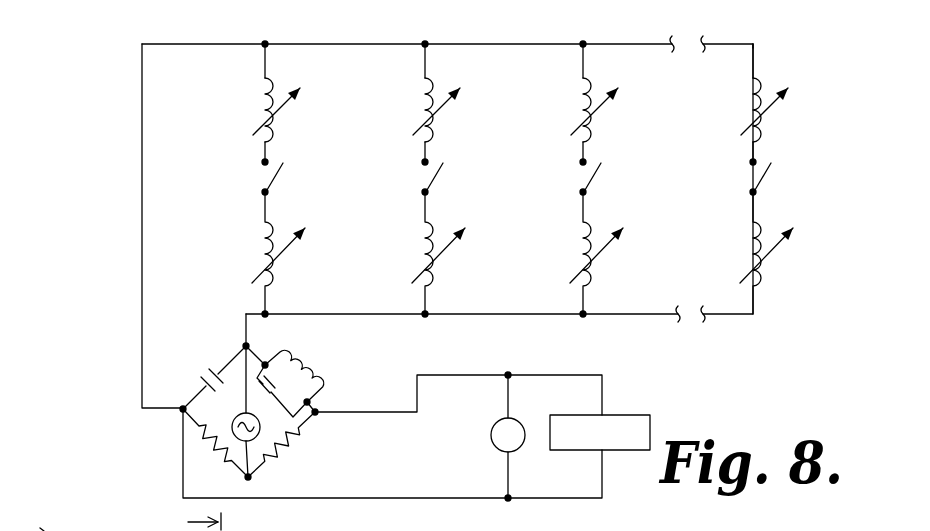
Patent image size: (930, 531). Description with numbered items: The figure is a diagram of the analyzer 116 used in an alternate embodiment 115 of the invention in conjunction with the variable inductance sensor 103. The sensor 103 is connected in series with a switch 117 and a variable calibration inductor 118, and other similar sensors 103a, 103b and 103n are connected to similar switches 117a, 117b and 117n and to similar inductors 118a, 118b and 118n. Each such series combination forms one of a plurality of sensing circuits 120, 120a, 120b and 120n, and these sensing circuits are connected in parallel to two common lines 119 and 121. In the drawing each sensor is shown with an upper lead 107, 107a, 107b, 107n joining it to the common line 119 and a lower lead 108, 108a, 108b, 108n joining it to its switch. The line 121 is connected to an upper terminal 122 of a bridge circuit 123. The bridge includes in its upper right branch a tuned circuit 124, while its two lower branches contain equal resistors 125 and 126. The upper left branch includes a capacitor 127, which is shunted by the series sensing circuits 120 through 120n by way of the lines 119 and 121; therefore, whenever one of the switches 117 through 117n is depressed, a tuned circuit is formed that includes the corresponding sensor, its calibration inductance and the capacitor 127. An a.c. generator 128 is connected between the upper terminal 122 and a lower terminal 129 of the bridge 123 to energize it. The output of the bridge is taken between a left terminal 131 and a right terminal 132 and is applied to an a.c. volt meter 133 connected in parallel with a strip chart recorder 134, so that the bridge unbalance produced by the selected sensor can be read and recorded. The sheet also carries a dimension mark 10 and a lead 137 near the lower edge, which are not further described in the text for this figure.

The spacing distance 10 is at (191, 518).
The sensor 103 is at (253, 116).
The sensor 103a is at (420, 114).
The sensor 103b is at (577, 117).
The sensor 103n is at (750, 118).
The upper inductor terminal lead 107 is at (268, 57).
The upper inductor terminal lead 107a is at (428, 57).
The upper inductor terminal lead 107b is at (585, 59).
The upper inductor terminal lead 107n is at (755, 68).
The lower inductor terminal lead 108 is at (268, 148).
The lower inductor terminal lead 108a is at (432, 148).
The lower inductor terminal lead 108b is at (585, 146).
The lower inductor terminal lead 108n is at (757, 149).
The alternate embodiment 115 is at (83, 63).
The analyzer 116 is at (105, 227).
The switch 117 is at (258, 177).
The switch 117a is at (420, 178).
The switch 117b is at (577, 179).
The switch 117n is at (748, 179).
The variable calibration inductor 118 is at (258, 261).
The variable calibration inductor 118a is at (420, 262).
The variable calibration inductor 118b is at (578, 263).
The variable calibration inductor 118n is at (748, 262).
The common line 119 is at (142, 105).
The sensing circuit 120 is at (238, 35).
The sensing circuit 120a is at (410, 35).
The sensing circuit 120b is at (570, 33).
The sensing circuit 120n is at (764, 44).
The common line 121 is at (302, 314).
The upper terminal 122 is at (245, 347).
The bridge circuit 123 is at (338, 396).
The tuned circuit 124 is at (338, 362).
The resistor 125 is at (256, 402).
The resistor 126 is at (200, 454).
The capacitor 127 is at (197, 364).
The a.c. generator 128 is at (262, 468).
The lower terminal 129 is at (247, 478).
The left terminal 131 is at (183, 409).
The right terminal 132 is at (315, 412).
The a.c. volt meter 133 is at (495, 420).
The strip chart recorder 134 is at (636, 415).
The lead 137 is at (65, 525).